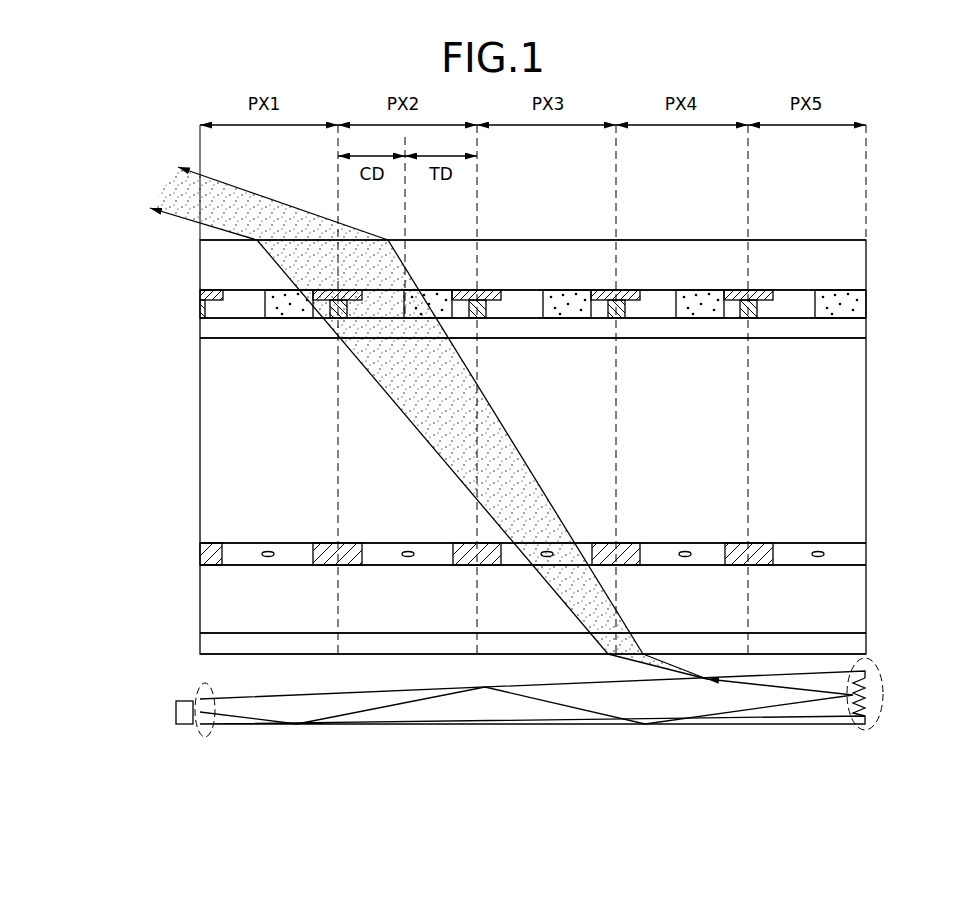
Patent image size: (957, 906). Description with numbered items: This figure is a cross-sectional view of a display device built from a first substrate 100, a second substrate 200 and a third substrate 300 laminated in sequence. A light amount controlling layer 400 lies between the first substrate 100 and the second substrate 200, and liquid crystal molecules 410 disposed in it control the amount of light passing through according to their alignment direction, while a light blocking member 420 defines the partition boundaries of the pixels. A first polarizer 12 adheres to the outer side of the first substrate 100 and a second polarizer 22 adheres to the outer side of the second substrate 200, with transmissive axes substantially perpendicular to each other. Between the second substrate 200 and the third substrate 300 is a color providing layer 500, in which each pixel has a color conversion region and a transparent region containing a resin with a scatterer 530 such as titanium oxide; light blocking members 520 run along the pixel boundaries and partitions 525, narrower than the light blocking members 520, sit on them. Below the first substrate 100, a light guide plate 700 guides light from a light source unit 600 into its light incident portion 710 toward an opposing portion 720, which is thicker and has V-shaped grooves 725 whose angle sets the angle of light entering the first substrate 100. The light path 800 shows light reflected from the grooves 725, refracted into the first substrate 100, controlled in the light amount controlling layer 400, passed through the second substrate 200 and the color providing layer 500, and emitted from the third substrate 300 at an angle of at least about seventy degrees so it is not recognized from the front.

The third substrate 300 is at (881, 240).
The color providing layer 500 is at (881, 290).
The light blocking member 520 is at (207, 292).
The partition 525 is at (203, 308).
The scatterer 530 is at (287, 309).
The second polarizer 22 is at (852, 328).
The second substrate 200 is at (881, 338).
The liquid crystal molecules 410 is at (690, 551).
The light amount controlling layer 400 is at (881, 543).
The light blocking member 420 is at (205, 562).
The first substrate 100 is at (881, 565).
The first polarizer 12 is at (855, 645).
The light guide plate 700 is at (560, 724).
The grooves 725 is at (860, 705).
The opposing portion 720 is at (873, 728).
The light path 800 is at (760, 712).
The light source unit 600 is at (176, 710).
The light incident portion 710 is at (195, 736).